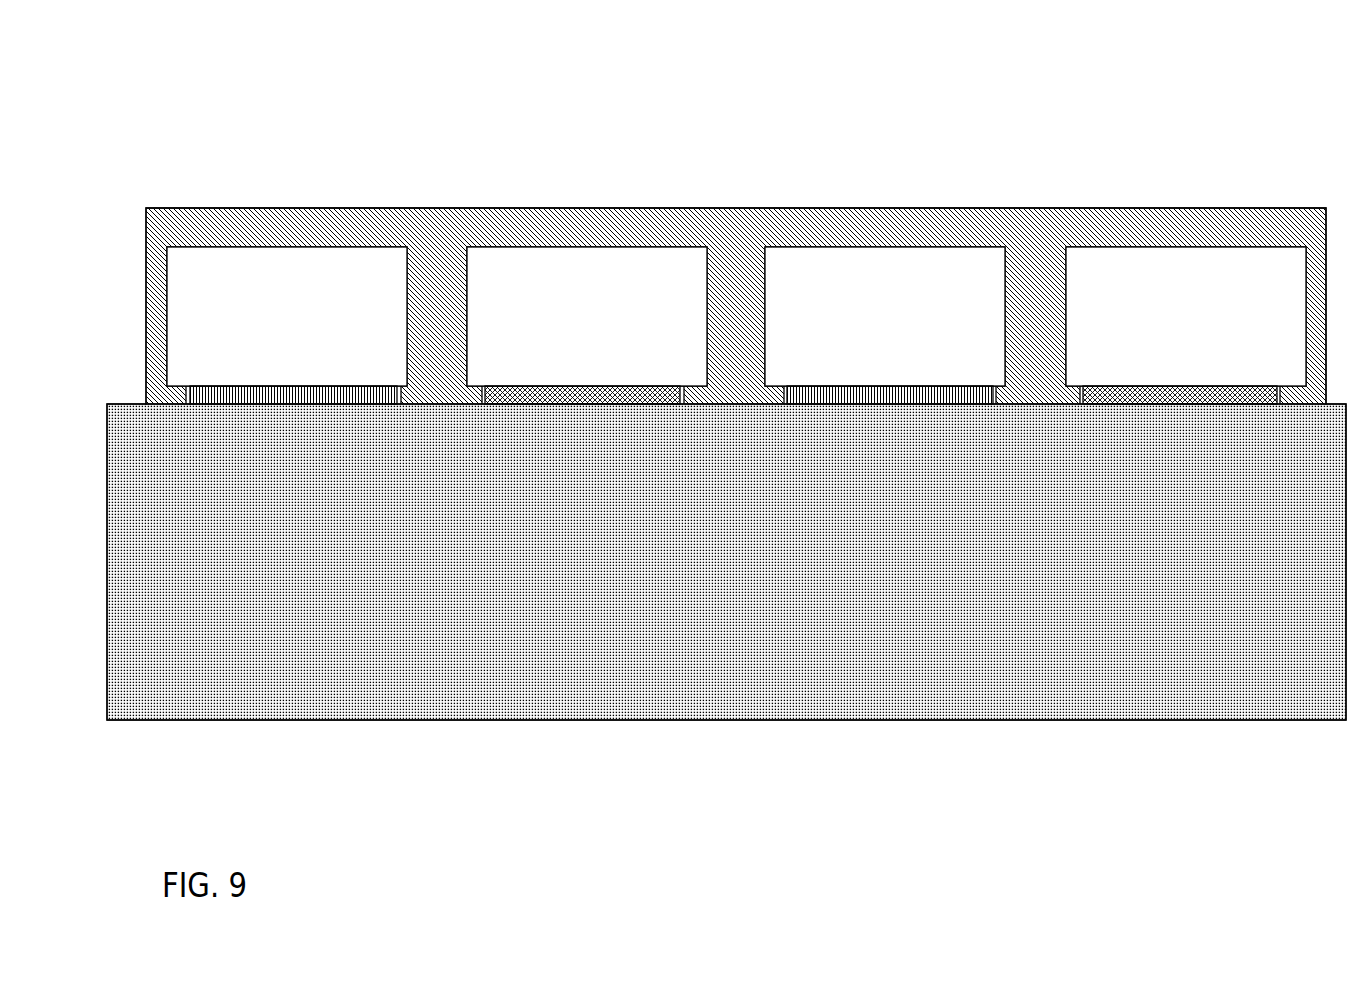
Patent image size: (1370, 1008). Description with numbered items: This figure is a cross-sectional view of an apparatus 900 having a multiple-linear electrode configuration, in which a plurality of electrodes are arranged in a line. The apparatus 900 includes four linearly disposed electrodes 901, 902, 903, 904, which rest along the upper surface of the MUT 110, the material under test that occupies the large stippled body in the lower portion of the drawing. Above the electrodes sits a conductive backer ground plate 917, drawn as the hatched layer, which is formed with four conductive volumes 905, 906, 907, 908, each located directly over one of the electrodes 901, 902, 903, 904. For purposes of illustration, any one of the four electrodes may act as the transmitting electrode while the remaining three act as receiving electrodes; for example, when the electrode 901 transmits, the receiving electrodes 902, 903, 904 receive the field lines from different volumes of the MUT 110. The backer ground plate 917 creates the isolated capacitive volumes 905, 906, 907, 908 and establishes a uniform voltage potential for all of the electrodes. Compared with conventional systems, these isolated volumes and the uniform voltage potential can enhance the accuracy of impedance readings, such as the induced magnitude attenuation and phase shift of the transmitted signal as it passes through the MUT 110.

The apparatus 900 is at (1141, 106).
The MUT 110 is at (610, 554).
The conductive backer ground plate 917 is at (733, 256).
The electrode 901 is at (293, 400).
The electrode 902 is at (593, 404).
The electrode 903 is at (871, 401).
The electrode 904 is at (1192, 398).
The conductive volume 905 is at (287, 316).
The conductive volume 906 is at (587, 316).
The conductive volume 907 is at (885, 316).
The conductive volume 908 is at (1186, 316).